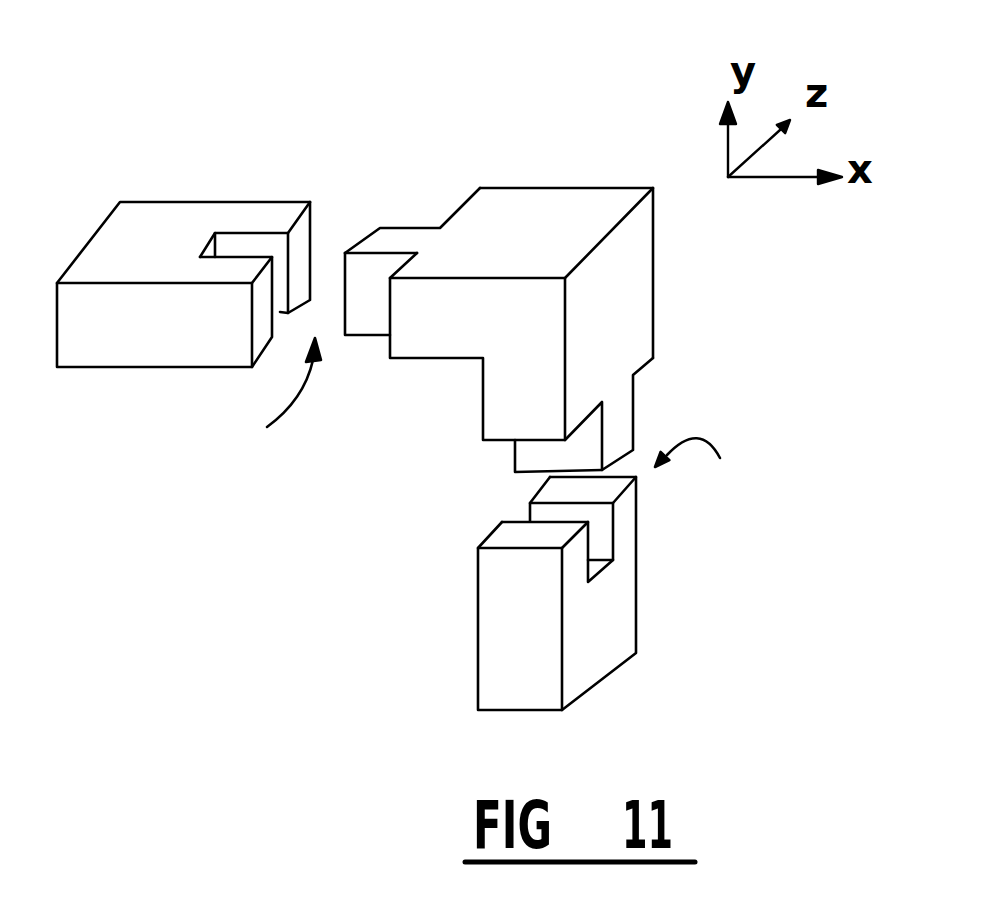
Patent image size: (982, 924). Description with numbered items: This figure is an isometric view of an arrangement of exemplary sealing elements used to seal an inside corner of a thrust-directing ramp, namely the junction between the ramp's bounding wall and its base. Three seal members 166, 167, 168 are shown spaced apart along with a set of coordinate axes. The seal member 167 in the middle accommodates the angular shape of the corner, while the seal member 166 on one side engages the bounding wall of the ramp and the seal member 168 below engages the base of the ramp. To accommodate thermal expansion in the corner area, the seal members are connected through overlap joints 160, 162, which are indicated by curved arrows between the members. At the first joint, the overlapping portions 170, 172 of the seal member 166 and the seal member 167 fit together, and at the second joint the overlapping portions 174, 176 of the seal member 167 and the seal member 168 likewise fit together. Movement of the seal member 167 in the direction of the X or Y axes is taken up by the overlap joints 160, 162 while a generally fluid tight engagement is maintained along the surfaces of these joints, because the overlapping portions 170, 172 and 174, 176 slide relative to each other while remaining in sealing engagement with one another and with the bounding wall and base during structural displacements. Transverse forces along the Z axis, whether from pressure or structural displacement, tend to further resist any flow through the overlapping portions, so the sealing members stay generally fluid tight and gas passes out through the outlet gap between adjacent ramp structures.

The overlap joint 160 is at (282, 416).
The overlap joint 162 is at (721, 462).
The seal member 166 is at (133, 202).
The seal member 167 is at (523, 222).
The seal member 168 is at (637, 630).
The overlapping portion 170 is at (252, 240).
The overlapping portion 172 is at (372, 242).
The overlapping portion 174 is at (635, 405).
The overlapping portion 176 is at (618, 532).